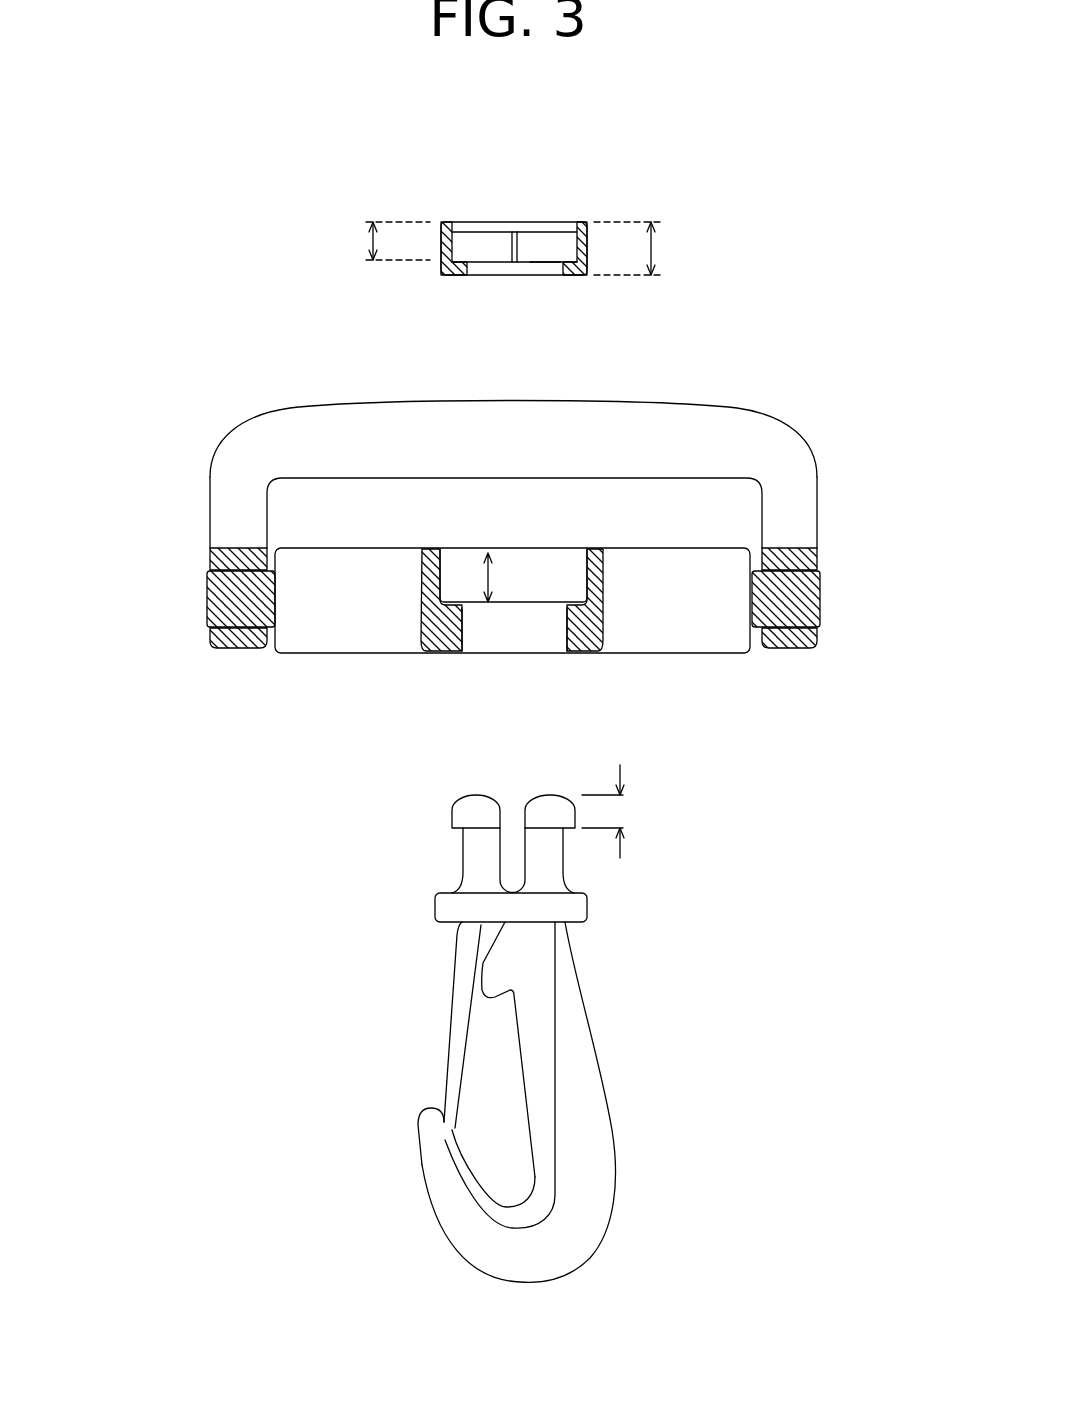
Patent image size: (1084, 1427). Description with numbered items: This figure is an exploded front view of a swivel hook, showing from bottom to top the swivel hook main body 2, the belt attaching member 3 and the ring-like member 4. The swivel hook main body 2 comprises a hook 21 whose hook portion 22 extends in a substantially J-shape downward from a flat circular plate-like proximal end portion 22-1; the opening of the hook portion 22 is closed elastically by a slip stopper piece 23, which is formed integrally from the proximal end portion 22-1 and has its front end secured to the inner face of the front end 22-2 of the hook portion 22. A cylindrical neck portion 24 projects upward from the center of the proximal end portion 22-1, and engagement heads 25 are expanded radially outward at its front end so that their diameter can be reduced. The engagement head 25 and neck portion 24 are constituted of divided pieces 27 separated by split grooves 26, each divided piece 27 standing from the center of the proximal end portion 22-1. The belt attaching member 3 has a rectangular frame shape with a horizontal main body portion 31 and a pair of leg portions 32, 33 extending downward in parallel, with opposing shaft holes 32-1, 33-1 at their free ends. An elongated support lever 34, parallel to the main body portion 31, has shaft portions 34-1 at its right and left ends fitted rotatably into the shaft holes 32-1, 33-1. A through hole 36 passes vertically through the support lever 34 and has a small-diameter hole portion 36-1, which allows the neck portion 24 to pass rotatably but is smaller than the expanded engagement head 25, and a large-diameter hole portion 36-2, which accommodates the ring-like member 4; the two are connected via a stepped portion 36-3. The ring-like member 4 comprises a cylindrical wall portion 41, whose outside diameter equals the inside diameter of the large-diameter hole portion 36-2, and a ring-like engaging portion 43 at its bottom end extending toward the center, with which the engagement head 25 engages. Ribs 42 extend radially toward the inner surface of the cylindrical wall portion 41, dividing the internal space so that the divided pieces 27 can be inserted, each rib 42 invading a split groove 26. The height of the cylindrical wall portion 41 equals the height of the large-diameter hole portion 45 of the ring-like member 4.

The swivel hook main body 2 is at (688, 1013).
The belt attaching member 3 is at (818, 427).
The ring-like member 4 is at (628, 153).
The hook 21 is at (618, 1165).
The hook portion 22 is at (550, 1263).
The proximal end portion 22-1 is at (452, 910).
The front end 22-2 is at (428, 1120).
The slip stopper piece 23 is at (453, 1018).
The neck portion 24 is at (553, 865).
The engagement head 25 is at (547, 805).
The split groove 26 is at (510, 805).
The divided piece 27 is at (457, 832).
The main body portion 31 is at (345, 428).
The leg portion 32 is at (210, 493).
The shaft hole 32-1 is at (233, 588).
The leg portion 33 is at (817, 493).
The shaft hole 33-1 is at (797, 590).
The support lever 34 is at (670, 643).
The shaft portion 34-1 is at (210, 598).
The through hole 36 is at (545, 570).
The small-diameter hole portion 36-1 is at (560, 630).
The large-diameter hole portion 36-2 is at (537, 592).
The stepped portion 36-3 is at (572, 600).
The cylindrical wall portion 41 is at (578, 233).
The rib 42 is at (512, 243).
The ring-like engaging portion 43 is at (560, 260).
The large-diameter hole portion 45 is at (462, 250).